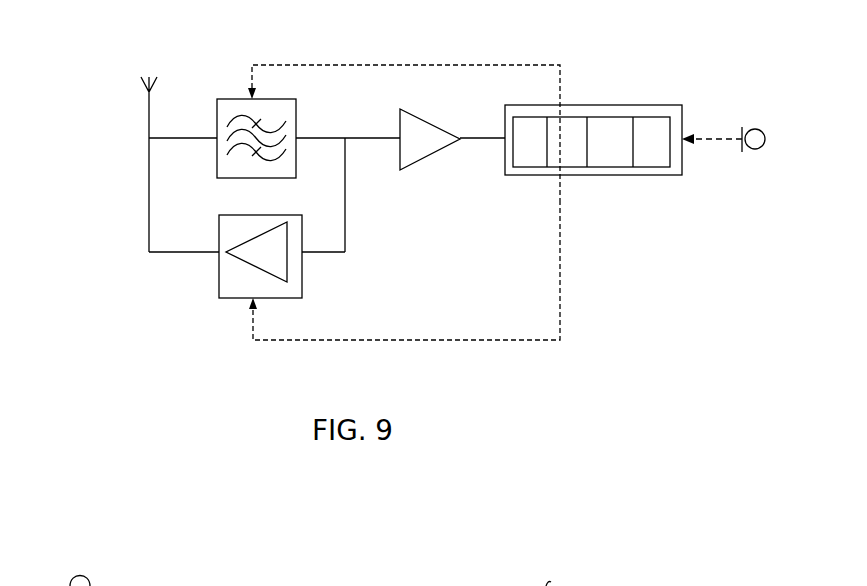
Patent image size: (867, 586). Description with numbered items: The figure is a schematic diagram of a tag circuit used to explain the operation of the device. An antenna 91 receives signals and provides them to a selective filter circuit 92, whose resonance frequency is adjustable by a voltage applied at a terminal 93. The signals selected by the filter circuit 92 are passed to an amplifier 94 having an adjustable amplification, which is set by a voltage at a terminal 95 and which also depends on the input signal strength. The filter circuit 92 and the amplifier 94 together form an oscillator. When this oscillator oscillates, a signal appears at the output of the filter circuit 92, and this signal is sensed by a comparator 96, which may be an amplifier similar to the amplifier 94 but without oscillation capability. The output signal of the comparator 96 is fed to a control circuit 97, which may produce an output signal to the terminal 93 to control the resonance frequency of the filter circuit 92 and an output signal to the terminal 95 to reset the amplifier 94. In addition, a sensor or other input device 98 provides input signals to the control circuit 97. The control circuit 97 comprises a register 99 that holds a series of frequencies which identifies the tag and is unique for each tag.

The antenna 91 is at (147, 108).
The selective filter circuit 92 is at (280, 99).
The terminal 93 is at (252, 92).
The amplifier 94 is at (219, 268).
The terminal 95 is at (247, 298).
The comparator 96 is at (430, 124).
The control circuit 97 is at (602, 175).
The sensor or other input device 98 is at (750, 128).
The register 99 is at (527, 168).